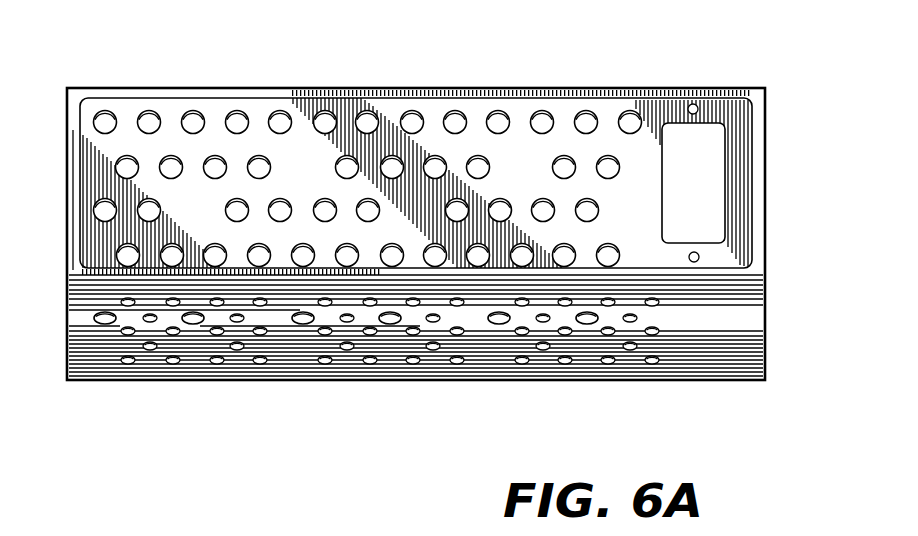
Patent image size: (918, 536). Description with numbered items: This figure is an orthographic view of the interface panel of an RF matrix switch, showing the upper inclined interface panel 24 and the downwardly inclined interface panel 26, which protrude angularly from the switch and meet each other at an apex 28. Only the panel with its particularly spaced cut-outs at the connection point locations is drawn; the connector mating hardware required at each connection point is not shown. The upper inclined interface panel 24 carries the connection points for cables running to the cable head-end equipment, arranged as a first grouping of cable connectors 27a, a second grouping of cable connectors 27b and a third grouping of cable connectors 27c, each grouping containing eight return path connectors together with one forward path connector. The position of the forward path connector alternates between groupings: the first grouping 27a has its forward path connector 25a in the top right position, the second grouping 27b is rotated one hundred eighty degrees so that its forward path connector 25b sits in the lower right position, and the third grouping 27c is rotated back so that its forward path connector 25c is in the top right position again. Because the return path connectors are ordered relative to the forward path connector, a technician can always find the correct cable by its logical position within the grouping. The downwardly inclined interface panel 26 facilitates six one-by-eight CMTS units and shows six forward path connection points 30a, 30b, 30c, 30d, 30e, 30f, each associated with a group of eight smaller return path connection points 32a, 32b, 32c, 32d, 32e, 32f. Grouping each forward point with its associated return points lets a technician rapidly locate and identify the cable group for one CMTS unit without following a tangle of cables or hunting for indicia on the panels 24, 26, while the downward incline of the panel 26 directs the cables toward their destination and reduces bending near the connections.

The upper inclined interface panel 24 is at (730, 103).
The downwardly inclined interface panel 26 is at (765, 330).
The apex 28 is at (752, 280).
The forward path connector 25a is at (197, 118).
The forward path connector 25b is at (301, 249).
The forward path connector 25c is at (415, 115).
The first grouping of cable connectors 27a is at (207, 82).
The second grouping of cable connectors 27b is at (293, 82).
The third grouping of cable connectors 27c is at (430, 82).
The forward path connection point 30a is at (96, 317).
The forward path connection point 30b is at (194, 325).
The forward path connection point 30c is at (304, 325).
The forward path connection point 30d is at (391, 325).
The forward path connection point 30e is at (500, 325).
The forward path connection point 30f is at (588, 325).
The return path connection points 32a is at (182, 388).
The return path connection points 32b is at (270, 388).
The return path connection points 32c is at (380, 388).
The return path connection points 32d is at (467, 388).
The return path connection points 32e is at (575, 388).
The return path connection points 32f is at (665, 388).